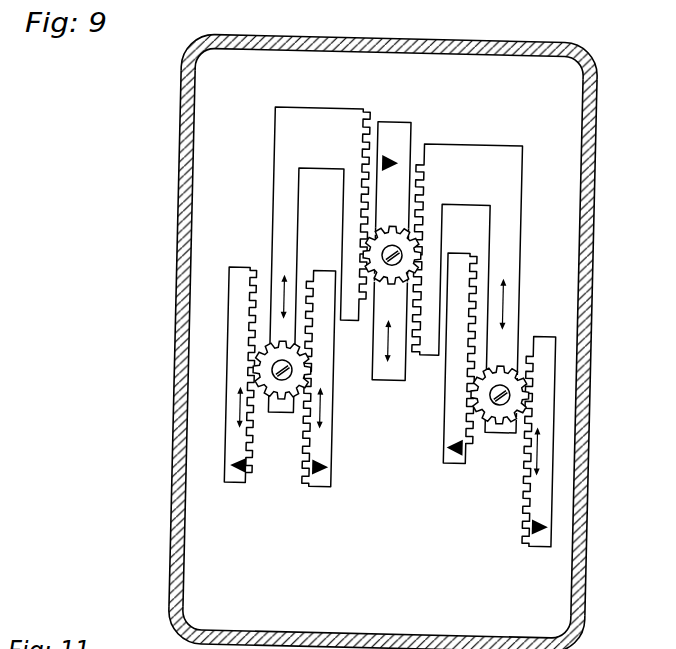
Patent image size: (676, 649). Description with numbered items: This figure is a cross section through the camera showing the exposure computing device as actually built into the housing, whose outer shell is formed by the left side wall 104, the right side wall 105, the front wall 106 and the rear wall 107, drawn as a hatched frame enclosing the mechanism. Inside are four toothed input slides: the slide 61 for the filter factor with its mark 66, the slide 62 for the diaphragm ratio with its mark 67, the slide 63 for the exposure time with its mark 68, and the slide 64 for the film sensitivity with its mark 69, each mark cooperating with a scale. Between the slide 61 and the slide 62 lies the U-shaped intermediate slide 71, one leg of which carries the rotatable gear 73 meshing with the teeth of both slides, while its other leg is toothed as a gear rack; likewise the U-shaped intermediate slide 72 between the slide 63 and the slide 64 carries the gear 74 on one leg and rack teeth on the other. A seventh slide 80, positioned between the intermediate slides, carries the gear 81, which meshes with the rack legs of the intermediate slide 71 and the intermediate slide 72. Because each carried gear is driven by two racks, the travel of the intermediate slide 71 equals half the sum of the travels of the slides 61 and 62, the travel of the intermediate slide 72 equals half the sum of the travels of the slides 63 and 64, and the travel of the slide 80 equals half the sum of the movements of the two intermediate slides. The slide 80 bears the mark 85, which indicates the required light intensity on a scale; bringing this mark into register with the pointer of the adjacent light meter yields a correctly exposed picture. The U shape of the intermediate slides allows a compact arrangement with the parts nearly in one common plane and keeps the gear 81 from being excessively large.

The slide 61 is at (238, 271).
The slide 62 is at (331, 443).
The slide 63 is at (443, 422).
The slide 64 is at (542, 342).
The mark 66 is at (236, 473).
The mark 67 is at (322, 477).
The mark 68 is at (453, 462).
The mark 69 is at (536, 548).
The intermediate slide 71 is at (345, 85).
The intermediate slide 72 is at (492, 151).
The gear 73 is at (278, 413).
The gear 74 is at (502, 421).
The slide 80 is at (388, 382).
The gear 81 is at (392, 219).
The mark 85 is at (390, 156).
The left side wall 104 is at (337, 637).
The right side wall 105 is at (321, 50).
The front wall 106 is at (177, 270).
The rear wall 107 is at (594, 247).